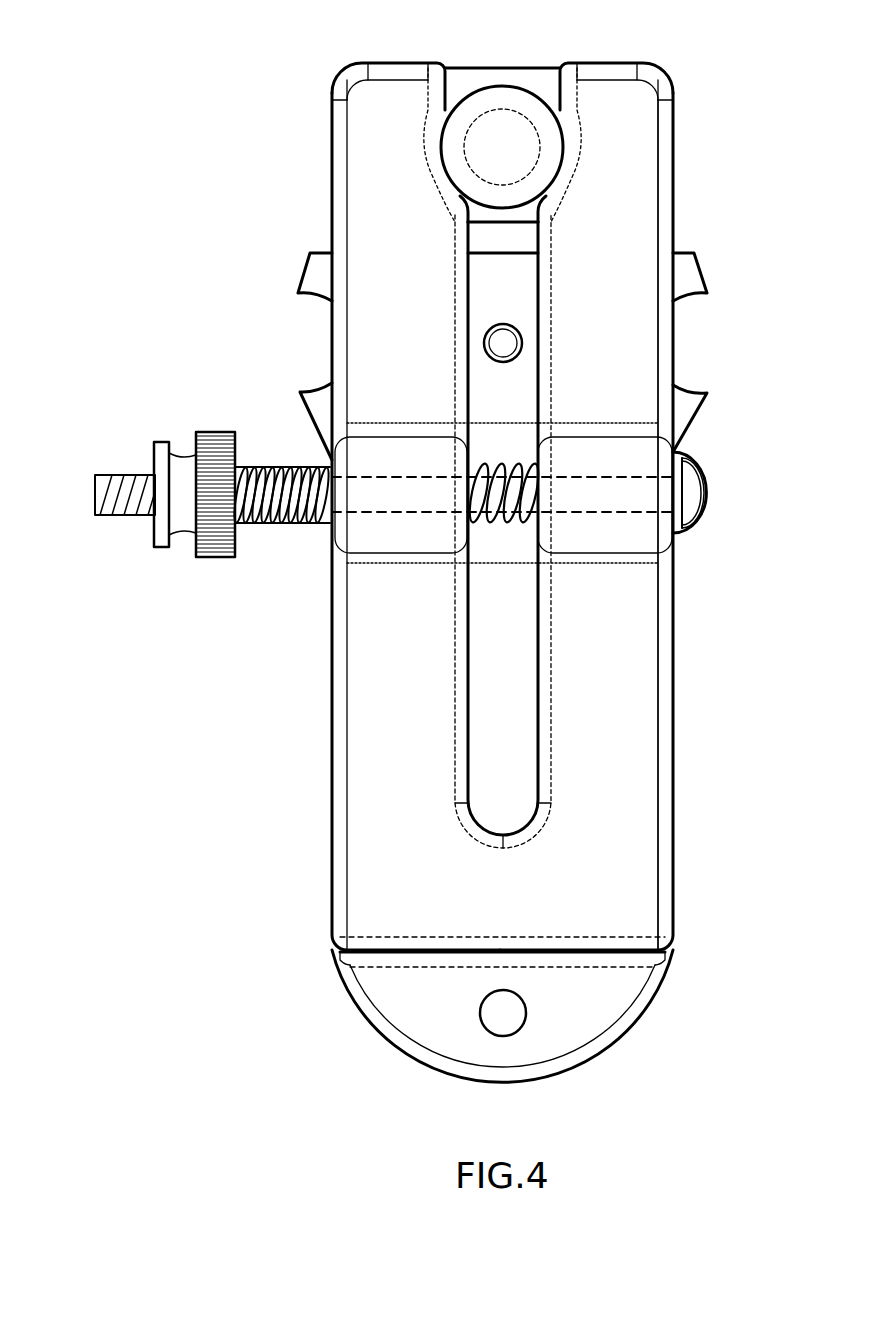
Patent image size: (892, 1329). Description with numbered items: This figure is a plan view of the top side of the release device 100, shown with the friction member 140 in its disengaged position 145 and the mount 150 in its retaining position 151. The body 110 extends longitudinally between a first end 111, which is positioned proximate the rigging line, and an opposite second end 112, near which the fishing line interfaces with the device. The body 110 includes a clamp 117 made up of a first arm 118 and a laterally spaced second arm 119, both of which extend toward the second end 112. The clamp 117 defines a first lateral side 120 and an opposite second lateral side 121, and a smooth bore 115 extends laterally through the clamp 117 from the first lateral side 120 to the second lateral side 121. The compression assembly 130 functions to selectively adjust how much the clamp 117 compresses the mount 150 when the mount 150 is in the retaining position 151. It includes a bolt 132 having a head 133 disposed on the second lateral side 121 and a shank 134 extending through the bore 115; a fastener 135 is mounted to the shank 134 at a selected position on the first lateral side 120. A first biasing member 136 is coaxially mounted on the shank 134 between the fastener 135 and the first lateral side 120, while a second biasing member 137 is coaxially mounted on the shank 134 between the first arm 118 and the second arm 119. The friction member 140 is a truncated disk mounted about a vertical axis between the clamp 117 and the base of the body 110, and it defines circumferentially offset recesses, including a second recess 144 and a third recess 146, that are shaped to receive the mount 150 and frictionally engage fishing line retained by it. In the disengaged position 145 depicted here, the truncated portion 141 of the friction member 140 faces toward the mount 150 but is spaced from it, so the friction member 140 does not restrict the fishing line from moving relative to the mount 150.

The release device 100 is at (220, 1102).
The body 110 is at (285, 900).
The first end 111 is at (503, 1083).
The second end 112 is at (400, 63).
The bore 115 is at (393, 475).
The clamp 117 is at (373, 840).
The first arm 118 is at (355, 772).
The second arm 119 is at (637, 715).
The first lateral side 120 is at (330, 675).
The second lateral side 121 is at (676, 619).
The compression assembly 130 is at (133, 393).
The bolt 132 is at (100, 512).
The head 133 is at (693, 507).
The shank 134 is at (493, 522).
The fastener 135 is at (175, 522).
The first biasing member 136 is at (252, 465).
The second biasing member 137 is at (523, 526).
The friction member 140 is at (292, 268).
The truncated portion 141 is at (320, 253).
The second recess 144 is at (688, 393).
The disengaged position 145 is at (709, 272).
The third recess 146 is at (318, 392).
The mount 150 is at (527, 84).
The retaining position 151 is at (493, 56).